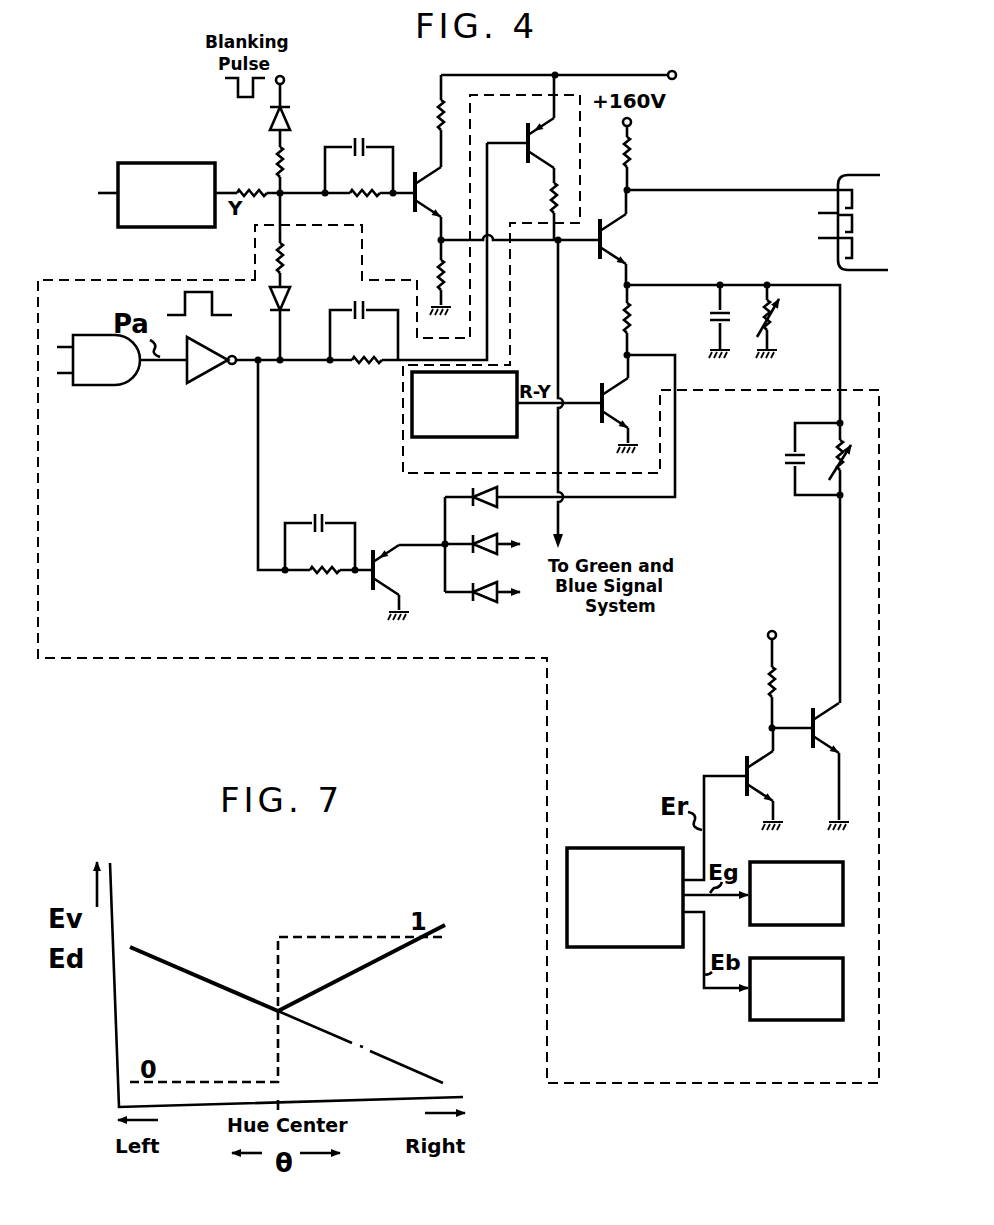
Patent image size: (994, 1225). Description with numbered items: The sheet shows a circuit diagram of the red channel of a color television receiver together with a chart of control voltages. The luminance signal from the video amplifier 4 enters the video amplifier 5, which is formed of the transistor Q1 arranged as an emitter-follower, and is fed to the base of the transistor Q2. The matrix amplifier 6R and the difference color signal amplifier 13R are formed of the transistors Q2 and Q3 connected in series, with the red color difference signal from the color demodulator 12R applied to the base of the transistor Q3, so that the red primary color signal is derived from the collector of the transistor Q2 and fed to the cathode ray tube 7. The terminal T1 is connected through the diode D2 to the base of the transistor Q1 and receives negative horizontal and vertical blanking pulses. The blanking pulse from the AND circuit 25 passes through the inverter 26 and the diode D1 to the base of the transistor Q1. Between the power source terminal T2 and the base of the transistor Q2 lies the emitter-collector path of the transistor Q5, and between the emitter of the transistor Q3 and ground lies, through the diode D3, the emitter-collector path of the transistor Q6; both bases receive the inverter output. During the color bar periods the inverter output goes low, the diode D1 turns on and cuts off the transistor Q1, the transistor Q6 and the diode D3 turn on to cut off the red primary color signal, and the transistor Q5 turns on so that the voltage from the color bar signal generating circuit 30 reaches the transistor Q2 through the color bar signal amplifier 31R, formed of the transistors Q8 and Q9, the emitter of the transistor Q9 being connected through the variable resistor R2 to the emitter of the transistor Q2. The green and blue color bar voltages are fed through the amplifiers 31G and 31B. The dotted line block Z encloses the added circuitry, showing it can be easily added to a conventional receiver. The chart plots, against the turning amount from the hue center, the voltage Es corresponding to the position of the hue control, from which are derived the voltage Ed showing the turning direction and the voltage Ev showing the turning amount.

In FIG. 4, the video amplifier 4 is at (178, 227).
In FIG. 4, the video amplifier 5 is at (413, 217).
In FIG. 4, the cathode ray tube 7 is at (870, 272).
In FIG. 4, the difference color signal amplifier 13R is at (778, 222).
In FIG. 4, the matrix amplifier 6R is at (853, 222).
In FIG. 4, the color demodulator 12R is at (488, 440).
In FIG. 4, the AND circuit 25 is at (104, 388).
In FIG. 4, the inverter 26 is at (205, 386).
In FIG. 4, the color bar signal generating circuit 30 is at (622, 950).
In FIG. 4, the color bar signal amplifier 31R is at (766, 741).
In FIG. 4, the amplifier 31G is at (843, 900).
In FIG. 4, the amplifier 31B is at (843, 1002).
In FIG. 4, the terminal T1 is at (285, 84).
In FIG. 4, the power source terminal T2 is at (674, 80).
In FIG. 4, the diode D1 is at (292, 292).
In FIG. 4, the diode D2 is at (268, 122).
In FIG. 4, the diode D3 is at (498, 503).
In FIG. 4, the transistor Q1 is at (415, 214).
In FIG. 4, the transistor Q2 is at (596, 262).
In FIG. 4, the transistor Q3 is at (592, 426).
In FIG. 4, the transistor Q5 is at (526, 156).
In FIG. 4, the transistor Q6 is at (368, 590).
In FIG. 4, the transistor Q8 is at (744, 770).
In FIG. 4, the transistor Q9 is at (810, 748).
In FIG. 4, the variable resistor R2 is at (831, 473).
In FIG. 4, the dotted line block Z is at (844, 538).
In FIG. 7, the voltage Ev is at (182, 974).
In FIG. 7, the voltage Ed is at (324, 935).
In FIG. 7, the voltage Es is at (377, 1052).